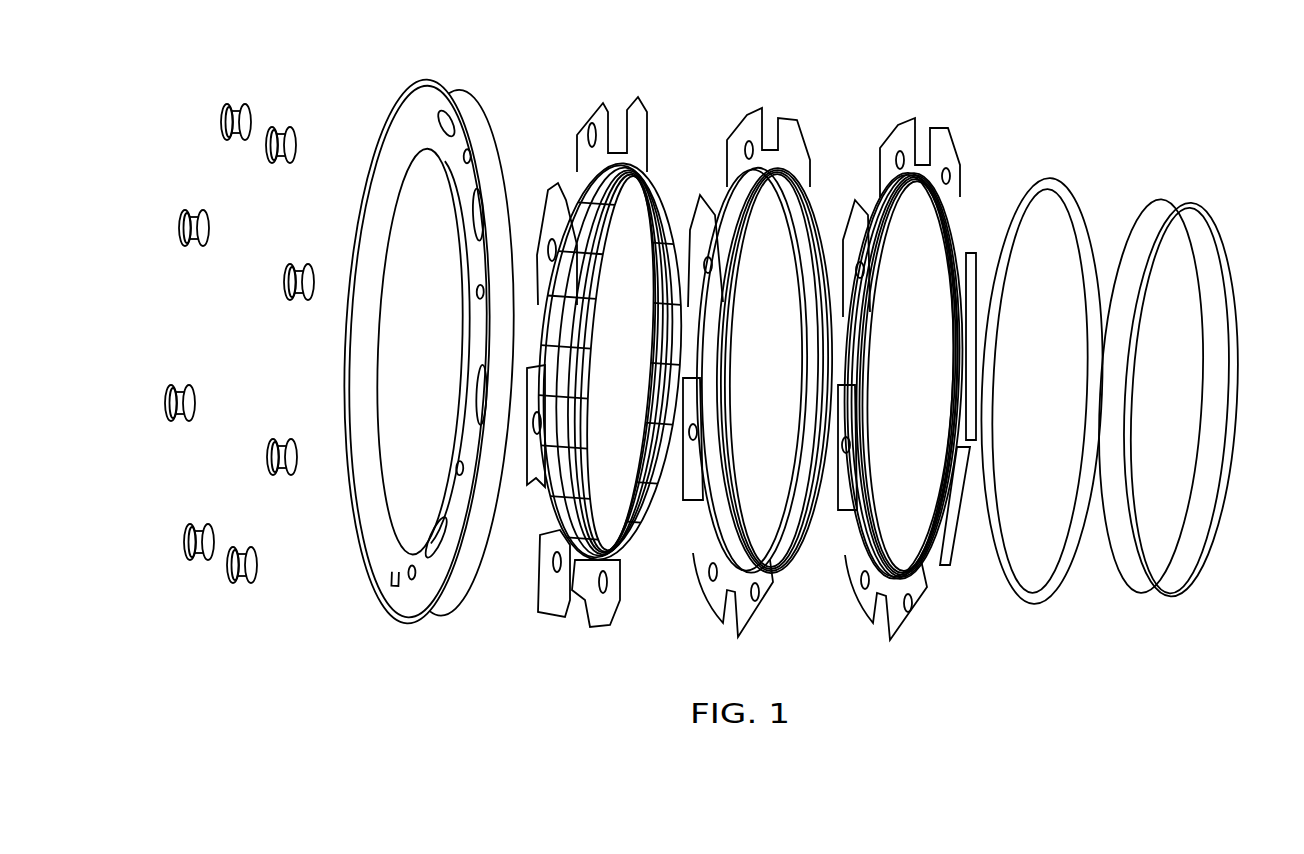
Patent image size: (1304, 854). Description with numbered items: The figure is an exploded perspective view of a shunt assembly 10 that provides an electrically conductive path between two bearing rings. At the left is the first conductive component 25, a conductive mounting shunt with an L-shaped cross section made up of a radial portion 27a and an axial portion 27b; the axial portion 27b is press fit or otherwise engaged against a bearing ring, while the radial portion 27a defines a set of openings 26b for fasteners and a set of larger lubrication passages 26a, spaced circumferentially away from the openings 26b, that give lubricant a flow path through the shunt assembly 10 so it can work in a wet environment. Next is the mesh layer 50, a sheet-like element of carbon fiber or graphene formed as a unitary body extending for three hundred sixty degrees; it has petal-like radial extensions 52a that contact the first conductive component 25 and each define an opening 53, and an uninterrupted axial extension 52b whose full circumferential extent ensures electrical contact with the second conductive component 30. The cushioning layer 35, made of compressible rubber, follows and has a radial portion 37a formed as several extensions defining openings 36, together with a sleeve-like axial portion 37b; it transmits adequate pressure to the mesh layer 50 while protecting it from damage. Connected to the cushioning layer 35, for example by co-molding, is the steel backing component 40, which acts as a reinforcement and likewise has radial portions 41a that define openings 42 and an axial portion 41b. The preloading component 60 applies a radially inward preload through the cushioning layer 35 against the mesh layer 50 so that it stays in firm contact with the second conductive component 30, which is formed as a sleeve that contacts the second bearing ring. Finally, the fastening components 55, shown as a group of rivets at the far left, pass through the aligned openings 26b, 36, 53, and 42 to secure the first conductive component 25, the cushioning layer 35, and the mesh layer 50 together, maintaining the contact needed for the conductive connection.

The shunt assembly 10 is at (1034, 112).
The first conductive component 25 is at (462, 87).
The lubrication passage 26a is at (450, 528).
The openings 26b is at (476, 292).
The radial portion 27a is at (476, 331).
The axial portion 27b is at (497, 152).
The second conductive component 30 is at (1217, 234).
The cushioning layer 35 is at (792, 150).
The openings 36 is at (740, 152).
The radial portion 37a is at (752, 118).
The axial portion 37b is at (722, 343).
The backing component 40 is at (907, 122).
The radial portion 41a is at (940, 150).
The axial portion 41b is at (956, 240).
The openings 42 is at (951, 178).
The mesh layer 50 is at (592, 120).
The radial extension 52a is at (632, 116).
The axial extension 52b is at (578, 292).
The opening 53 is at (541, 421).
The fastening component 55 is at (283, 128).
The preloading component 60 is at (1052, 183).